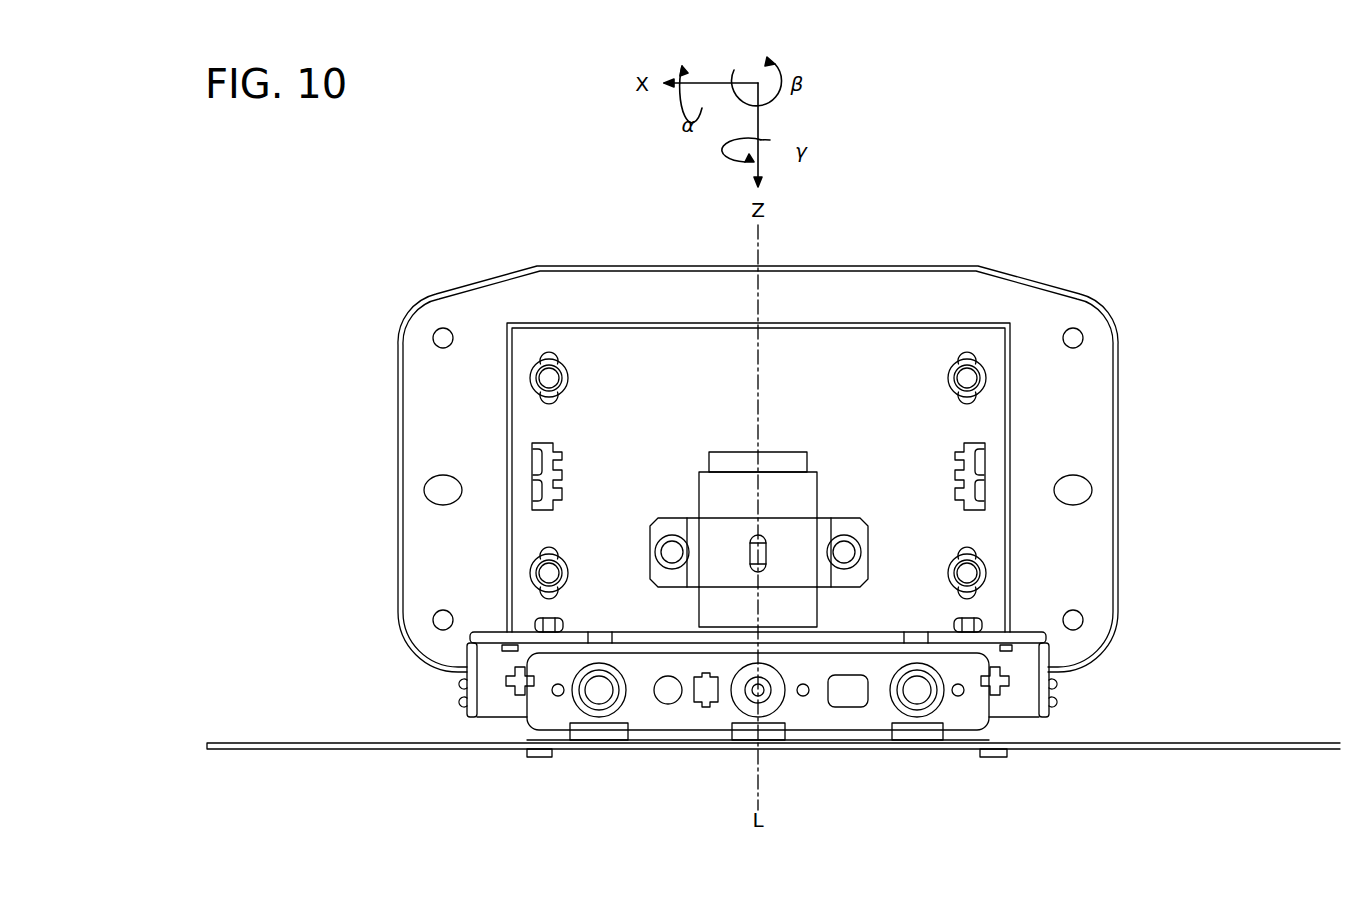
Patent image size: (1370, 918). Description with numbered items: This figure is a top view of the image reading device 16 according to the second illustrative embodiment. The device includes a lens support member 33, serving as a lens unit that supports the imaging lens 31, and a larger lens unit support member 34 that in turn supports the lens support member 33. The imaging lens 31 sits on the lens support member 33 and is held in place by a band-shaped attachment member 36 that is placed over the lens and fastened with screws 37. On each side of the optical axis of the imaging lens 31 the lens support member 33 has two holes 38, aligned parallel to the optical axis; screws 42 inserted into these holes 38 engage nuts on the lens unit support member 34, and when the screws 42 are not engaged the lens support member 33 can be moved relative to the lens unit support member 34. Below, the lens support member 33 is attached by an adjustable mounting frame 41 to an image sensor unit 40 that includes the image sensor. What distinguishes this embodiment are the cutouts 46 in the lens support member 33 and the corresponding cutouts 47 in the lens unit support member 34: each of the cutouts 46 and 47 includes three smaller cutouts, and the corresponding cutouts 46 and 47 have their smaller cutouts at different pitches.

The image reading device 16 is at (1146, 229).
The imaging lens 31 is at (812, 480).
The lens support member 33 is at (686, 334).
The lens unit support member 34 is at (415, 400).
The band-shaped attachment member 36 is at (800, 527).
The screws 37 is at (672, 550).
The holes 38 is at (962, 362).
The image sensor unit 40 is at (1130, 750).
The adjustable mounting frame 41 is at (652, 717).
The screws 42 is at (956, 382).
The cutouts 46 is at (549, 446).
The cutouts 47 is at (546, 478).